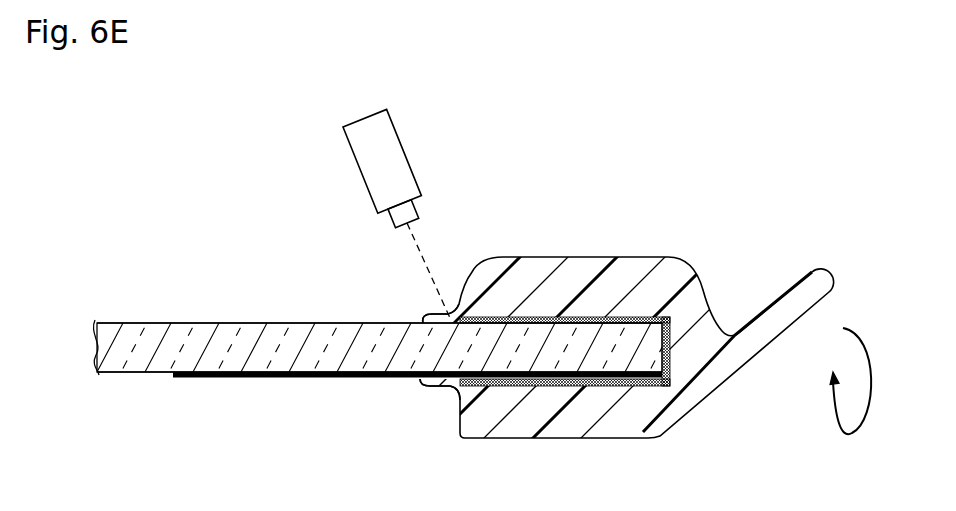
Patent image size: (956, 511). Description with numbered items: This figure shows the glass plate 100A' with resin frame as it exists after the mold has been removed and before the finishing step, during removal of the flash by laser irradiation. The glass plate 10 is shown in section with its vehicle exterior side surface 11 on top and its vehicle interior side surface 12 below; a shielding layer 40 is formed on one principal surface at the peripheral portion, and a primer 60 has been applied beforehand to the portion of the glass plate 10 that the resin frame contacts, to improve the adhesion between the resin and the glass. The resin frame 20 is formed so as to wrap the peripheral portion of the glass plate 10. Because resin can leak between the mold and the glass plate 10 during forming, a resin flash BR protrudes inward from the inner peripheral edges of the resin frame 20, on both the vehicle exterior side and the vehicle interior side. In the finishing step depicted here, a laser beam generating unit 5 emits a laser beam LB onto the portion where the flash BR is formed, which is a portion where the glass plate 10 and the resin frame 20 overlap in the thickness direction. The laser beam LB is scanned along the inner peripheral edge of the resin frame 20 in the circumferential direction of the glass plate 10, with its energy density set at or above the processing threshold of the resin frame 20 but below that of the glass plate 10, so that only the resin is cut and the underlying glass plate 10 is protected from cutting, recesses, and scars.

The laser beam generating unit 5 is at (408, 153).
The glass plate 10 is at (123, 352).
The vehicle exterior side surface 11 is at (173, 322).
The vehicle interior side surface 12 is at (143, 374).
The resin frame 20 is at (557, 410).
The shielding layer 40 is at (307, 378).
The primer 60 is at (543, 318).
The glass plate with resin frame 100A' is at (495, 251).
The laser beam LB is at (437, 254).
The resin flash BR is at (427, 307).